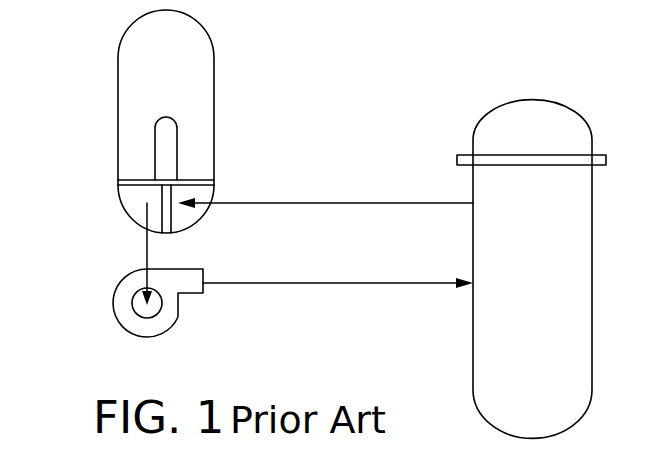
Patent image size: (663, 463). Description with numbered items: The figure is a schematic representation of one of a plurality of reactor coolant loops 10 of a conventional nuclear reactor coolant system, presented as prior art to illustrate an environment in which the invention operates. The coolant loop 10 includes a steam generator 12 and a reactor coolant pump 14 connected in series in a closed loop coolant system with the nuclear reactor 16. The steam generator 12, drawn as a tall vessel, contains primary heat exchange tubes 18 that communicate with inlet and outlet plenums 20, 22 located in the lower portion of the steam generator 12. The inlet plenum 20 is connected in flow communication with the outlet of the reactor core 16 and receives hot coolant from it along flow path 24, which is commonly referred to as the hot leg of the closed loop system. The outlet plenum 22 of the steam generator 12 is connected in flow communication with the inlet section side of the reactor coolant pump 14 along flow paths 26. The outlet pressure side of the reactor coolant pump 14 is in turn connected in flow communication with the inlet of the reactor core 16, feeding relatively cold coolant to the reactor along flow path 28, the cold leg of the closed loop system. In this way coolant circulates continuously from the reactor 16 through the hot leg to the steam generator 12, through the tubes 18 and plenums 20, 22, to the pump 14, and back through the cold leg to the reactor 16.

The reactor coolant loop 10 is at (392, 125).
The steam generator 12 is at (213, 67).
The reactor coolant pump 14 is at (177, 318).
The nuclear reactor 16 is at (548, 315).
The primary heat exchange tubes 18 is at (177, 145).
The inlet plenum 20 is at (197, 218).
The outlet plenum 22 is at (130, 197).
The flow path 24 is at (330, 203).
The flow paths 26 is at (147, 250).
The flow path 28 is at (333, 283).